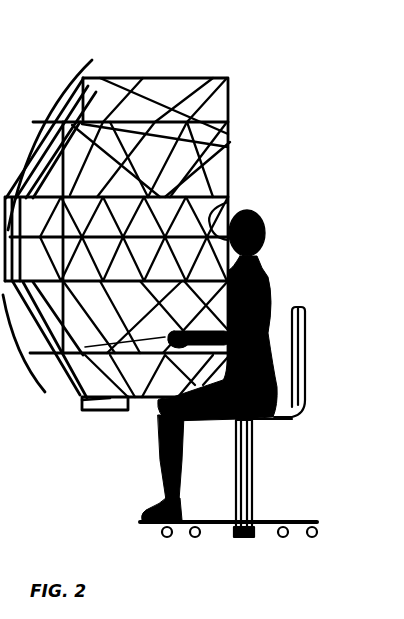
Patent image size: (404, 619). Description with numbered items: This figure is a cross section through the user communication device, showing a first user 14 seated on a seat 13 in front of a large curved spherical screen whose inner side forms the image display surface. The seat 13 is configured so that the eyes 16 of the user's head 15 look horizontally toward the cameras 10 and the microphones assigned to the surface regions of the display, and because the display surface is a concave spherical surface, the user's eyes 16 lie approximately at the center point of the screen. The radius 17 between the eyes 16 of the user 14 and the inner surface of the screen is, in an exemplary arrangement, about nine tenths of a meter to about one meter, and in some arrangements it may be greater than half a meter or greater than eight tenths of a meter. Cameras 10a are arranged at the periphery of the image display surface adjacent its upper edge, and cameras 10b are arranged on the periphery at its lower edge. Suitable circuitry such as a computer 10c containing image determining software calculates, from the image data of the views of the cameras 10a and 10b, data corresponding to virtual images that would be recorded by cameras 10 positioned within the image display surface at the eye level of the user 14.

The camera 10 is at (48, 208).
The camera 10a is at (80, 77).
The camera 10b is at (36, 356).
The computer 10c is at (110, 408).
The seat 13 is at (290, 418).
The first user 14 is at (272, 277).
The user's head 15 is at (266, 220).
The user's eyes 16 is at (228, 202).
The radius 17 is at (230, 142).